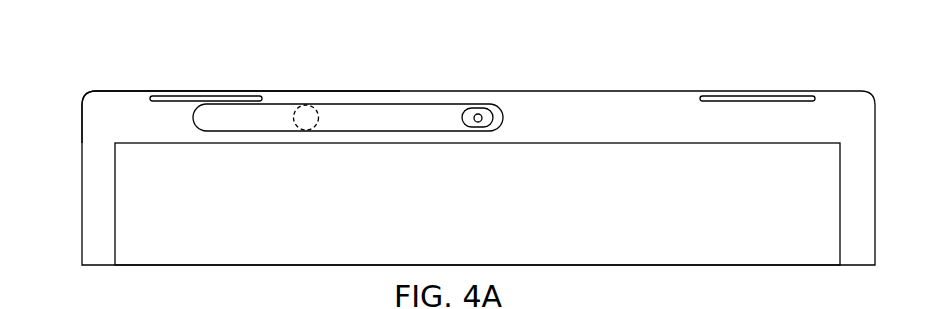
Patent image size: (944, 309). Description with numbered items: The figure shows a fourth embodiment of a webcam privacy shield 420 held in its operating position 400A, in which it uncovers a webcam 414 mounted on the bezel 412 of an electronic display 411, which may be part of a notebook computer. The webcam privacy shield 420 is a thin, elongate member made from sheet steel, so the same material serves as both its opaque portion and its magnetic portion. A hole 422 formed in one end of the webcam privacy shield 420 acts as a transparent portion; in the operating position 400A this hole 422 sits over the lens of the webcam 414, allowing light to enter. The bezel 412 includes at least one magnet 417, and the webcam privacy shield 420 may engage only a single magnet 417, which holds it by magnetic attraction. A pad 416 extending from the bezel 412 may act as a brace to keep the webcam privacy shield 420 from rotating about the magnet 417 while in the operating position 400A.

The operating position 400A is at (579, 78).
The electronic display 411 is at (190, 226).
The bezel 412 is at (83, 107).
The webcam 414 is at (477, 113).
The pad 416 is at (187, 99).
The magnet 417 is at (292, 95).
The webcam privacy shield 420 is at (369, 110).
The hole 422 is at (497, 112).